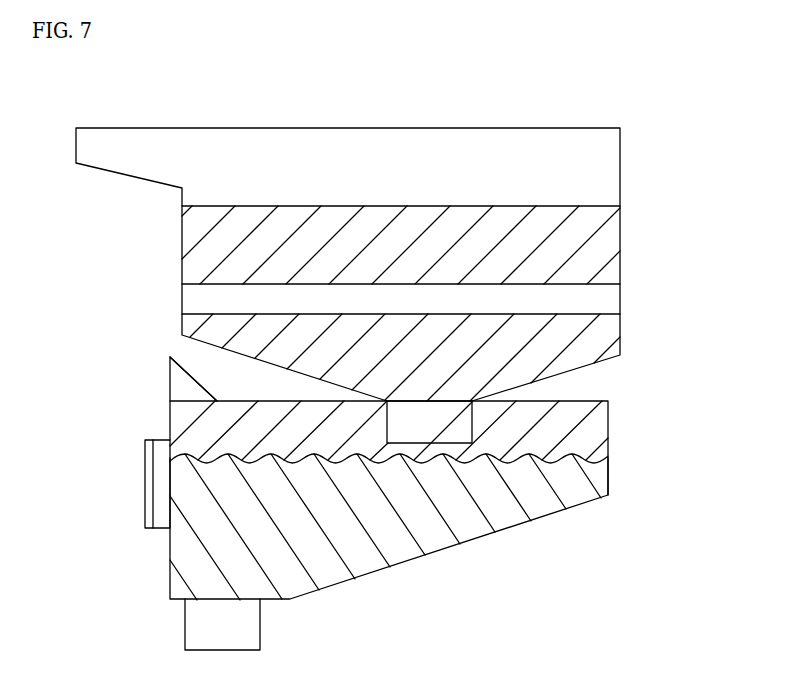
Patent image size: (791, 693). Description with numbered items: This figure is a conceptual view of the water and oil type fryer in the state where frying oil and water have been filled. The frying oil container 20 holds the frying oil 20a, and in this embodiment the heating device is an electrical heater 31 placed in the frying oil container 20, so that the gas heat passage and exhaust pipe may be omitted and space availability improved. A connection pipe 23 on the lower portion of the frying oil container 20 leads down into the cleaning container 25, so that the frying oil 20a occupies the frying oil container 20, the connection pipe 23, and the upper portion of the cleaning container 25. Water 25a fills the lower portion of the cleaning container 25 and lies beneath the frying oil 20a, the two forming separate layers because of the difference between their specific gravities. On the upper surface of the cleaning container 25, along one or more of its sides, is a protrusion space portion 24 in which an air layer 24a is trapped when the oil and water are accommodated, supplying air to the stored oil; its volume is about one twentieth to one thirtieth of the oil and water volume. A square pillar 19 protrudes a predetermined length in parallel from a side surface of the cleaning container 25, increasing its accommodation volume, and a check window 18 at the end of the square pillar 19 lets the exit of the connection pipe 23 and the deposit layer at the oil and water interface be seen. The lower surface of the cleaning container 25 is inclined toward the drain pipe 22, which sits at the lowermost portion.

The frying oil container 20 is at (620, 232).
The frying oil 20a is at (193, 236).
The electrical heater 31 is at (610, 297).
The connection pipe 23 is at (487, 424).
The protrusion space portion 24 is at (167, 363).
The air layer 24a is at (178, 382).
The check window 18 is at (147, 485).
The square pillar 19 is at (157, 438).
The cleaning container 25 is at (523, 530).
The water 25a is at (593, 473).
The drain pipe 22 is at (262, 627).